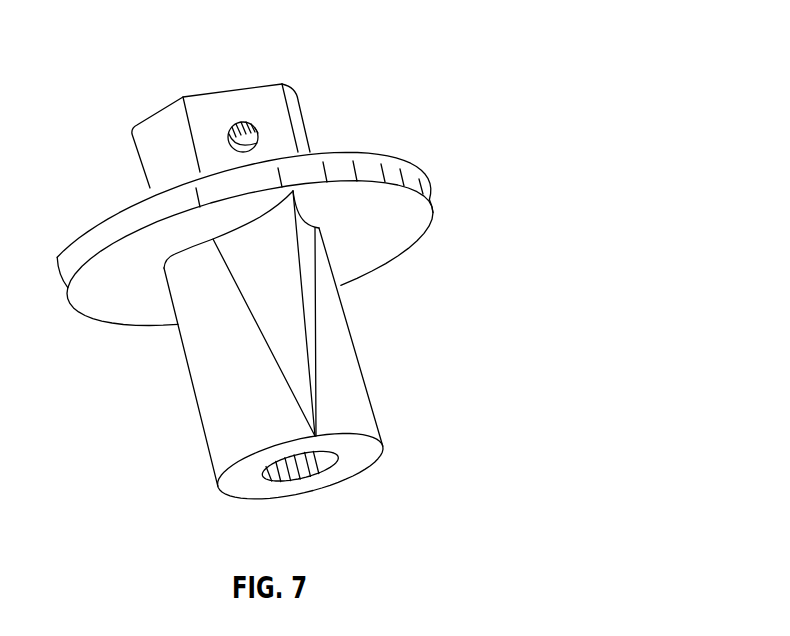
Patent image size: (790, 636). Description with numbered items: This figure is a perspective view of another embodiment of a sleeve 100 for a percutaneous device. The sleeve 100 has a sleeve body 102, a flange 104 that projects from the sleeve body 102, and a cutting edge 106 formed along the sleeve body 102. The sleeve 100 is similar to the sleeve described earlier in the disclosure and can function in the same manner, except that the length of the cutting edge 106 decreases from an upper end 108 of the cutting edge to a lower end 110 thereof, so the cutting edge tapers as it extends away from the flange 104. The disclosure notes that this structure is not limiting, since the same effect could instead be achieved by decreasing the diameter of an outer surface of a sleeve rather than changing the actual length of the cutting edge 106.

The sleeve 100 is at (407, 44).
The sleeve body 102 is at (225, 410).
The flange 104 is at (368, 160).
The cutting edge 106 is at (282, 304).
The upper end 108 is at (296, 197).
The lower end 110 is at (352, 474).